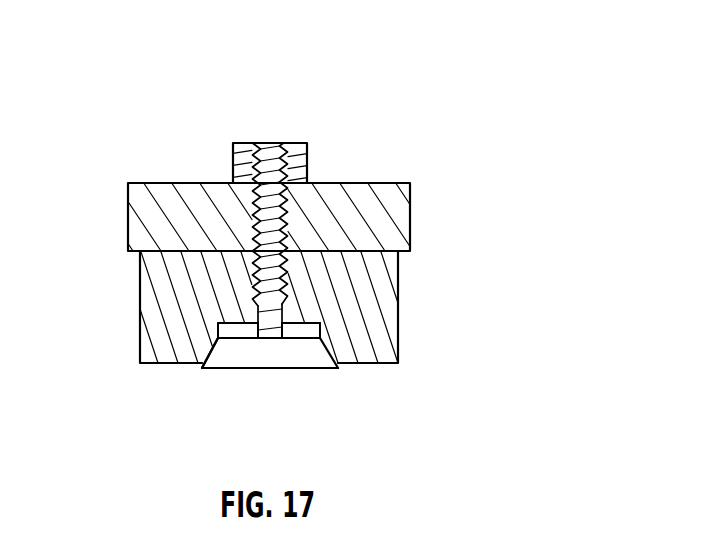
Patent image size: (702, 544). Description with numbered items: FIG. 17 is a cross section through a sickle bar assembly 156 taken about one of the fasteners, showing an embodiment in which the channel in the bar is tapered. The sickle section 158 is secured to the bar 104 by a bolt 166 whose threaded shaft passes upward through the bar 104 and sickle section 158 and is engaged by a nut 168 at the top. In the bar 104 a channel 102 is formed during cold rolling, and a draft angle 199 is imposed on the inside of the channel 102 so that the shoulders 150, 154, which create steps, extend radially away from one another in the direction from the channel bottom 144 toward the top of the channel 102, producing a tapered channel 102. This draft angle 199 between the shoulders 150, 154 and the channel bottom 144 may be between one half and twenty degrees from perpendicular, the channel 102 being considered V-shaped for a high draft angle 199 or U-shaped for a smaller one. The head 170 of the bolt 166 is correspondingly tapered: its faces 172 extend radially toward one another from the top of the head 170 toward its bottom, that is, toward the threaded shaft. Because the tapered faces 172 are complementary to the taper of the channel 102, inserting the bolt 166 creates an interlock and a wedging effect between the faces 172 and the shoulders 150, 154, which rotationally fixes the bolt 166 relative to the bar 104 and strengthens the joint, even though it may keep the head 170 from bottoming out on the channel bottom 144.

The sickle bar assembly 156 is at (449, 57).
The bolt 166 is at (270, 152).
The nut 168 is at (233, 166).
The channel bottom 144 is at (295, 321).
The sickle section 158 is at (157, 218).
The bar 104 is at (358, 277).
The channel 102 is at (305, 332).
The draft angle 199 is at (224, 326).
The faces 172 is at (356, 335).
The shoulder 154 is at (241, 342).
The shoulder 150 is at (301, 340).
The head 170 is at (265, 356).